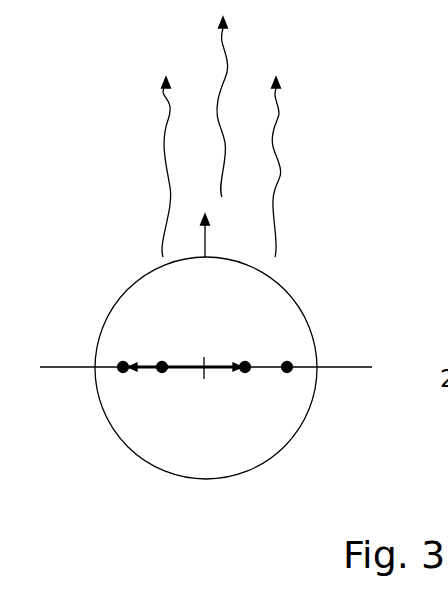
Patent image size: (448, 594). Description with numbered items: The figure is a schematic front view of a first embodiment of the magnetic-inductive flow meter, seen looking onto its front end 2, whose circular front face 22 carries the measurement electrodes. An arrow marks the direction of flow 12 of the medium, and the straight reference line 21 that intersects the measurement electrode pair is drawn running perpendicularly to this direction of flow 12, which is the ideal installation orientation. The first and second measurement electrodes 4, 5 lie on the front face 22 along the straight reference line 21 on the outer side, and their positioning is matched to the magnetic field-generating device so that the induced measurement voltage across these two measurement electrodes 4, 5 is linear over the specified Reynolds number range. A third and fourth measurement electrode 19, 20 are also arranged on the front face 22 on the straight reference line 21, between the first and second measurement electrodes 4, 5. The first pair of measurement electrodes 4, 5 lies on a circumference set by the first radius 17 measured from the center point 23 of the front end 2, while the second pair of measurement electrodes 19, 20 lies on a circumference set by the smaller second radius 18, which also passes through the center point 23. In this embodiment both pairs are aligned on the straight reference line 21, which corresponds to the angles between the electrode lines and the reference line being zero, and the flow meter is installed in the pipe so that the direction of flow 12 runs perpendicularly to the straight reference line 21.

The front end 2 is at (110, 307).
The first measurement electrode 4 is at (288, 366).
The second measurement electrode 5 is at (120, 368).
The direction of flow 12 is at (205, 245).
The first radius 17 is at (180, 368).
The second radius 18 is at (222, 368).
The third measurement electrode 19 is at (162, 372).
The fourth measurement electrode 20 is at (247, 366).
The straight reference line 21 is at (350, 367).
The front face 22 is at (195, 457).
The center point 23 is at (204, 367).